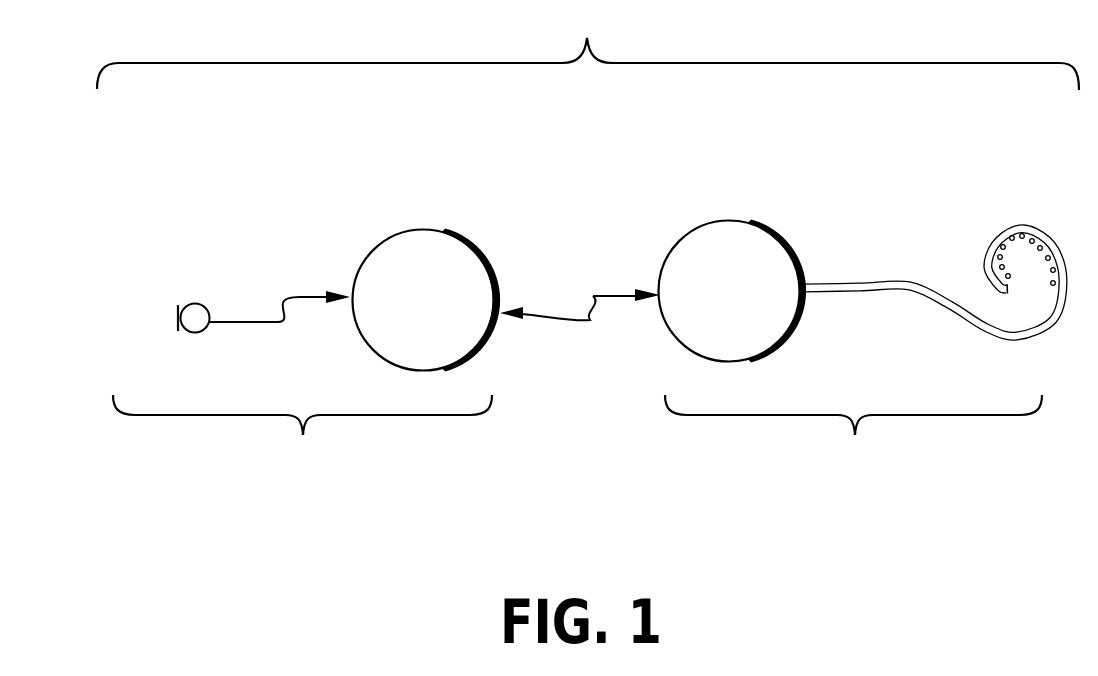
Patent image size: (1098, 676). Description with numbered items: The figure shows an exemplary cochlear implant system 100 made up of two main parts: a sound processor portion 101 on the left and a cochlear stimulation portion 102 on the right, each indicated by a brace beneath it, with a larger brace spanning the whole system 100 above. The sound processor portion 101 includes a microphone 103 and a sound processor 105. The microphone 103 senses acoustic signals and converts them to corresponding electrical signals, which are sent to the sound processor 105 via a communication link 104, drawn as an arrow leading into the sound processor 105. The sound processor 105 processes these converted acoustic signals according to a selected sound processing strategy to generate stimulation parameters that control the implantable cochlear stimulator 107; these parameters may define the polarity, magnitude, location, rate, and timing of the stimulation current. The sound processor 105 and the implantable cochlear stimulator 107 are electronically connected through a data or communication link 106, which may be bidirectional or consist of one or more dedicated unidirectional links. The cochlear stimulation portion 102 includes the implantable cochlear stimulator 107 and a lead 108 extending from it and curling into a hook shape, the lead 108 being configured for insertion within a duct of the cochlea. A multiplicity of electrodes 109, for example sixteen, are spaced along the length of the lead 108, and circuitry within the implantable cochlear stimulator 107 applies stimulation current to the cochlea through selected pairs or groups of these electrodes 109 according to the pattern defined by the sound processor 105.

The cochlear implant system 100 is at (588, 50).
The sound processor portion 101 is at (302, 431).
The cochlear stimulation portion 102 is at (853, 431).
The microphone 103 is at (180, 303).
The communication link 104 is at (283, 297).
The sound processor 105 is at (408, 229).
The data or communication link 106 is at (593, 296).
The implantable cochlear stimulator 107 is at (718, 245).
The lead 108 is at (1002, 192).
The electrodes 109 is at (1037, 243).